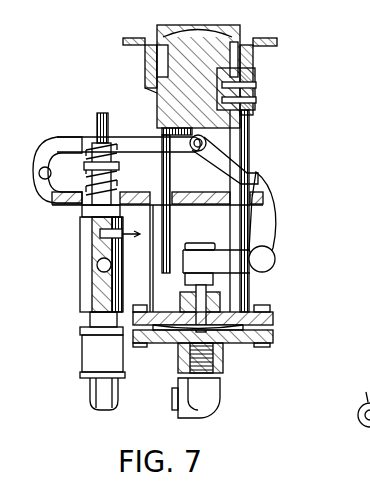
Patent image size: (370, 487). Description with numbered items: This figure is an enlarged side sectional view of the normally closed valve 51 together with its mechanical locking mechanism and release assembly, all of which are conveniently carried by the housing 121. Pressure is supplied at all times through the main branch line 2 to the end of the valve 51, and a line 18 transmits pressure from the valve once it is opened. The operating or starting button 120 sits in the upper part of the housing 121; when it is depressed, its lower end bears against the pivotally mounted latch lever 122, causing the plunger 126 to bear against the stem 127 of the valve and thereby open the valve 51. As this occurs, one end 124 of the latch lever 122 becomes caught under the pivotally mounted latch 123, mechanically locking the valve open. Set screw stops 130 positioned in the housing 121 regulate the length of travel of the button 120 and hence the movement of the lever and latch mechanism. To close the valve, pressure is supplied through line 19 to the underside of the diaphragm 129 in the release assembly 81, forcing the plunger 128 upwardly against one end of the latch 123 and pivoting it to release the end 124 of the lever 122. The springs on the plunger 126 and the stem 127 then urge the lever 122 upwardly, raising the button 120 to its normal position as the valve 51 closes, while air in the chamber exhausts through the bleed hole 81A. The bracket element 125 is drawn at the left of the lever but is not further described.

The operating button 120 is at (233, 31).
The housing 121 is at (277, 43).
The set screw stops 130 is at (258, 100).
The latch lever 122 is at (155, 137).
The end of latch lever 124 is at (258, 174).
The latch 123 is at (277, 196).
The plunger 126 is at (112, 168).
The stem 127 is at (113, 183).
The bracket 125 is at (62, 203).
The line 18 is at (98, 262).
The valve 51 is at (82, 270).
The plunger 128 is at (210, 300).
The release assembly 81 is at (282, 323).
The bleed hole 81A is at (243, 349).
The diaphragm 129 is at (178, 340).
The main branch line 2 is at (90, 399).
The line 19 is at (172, 400).